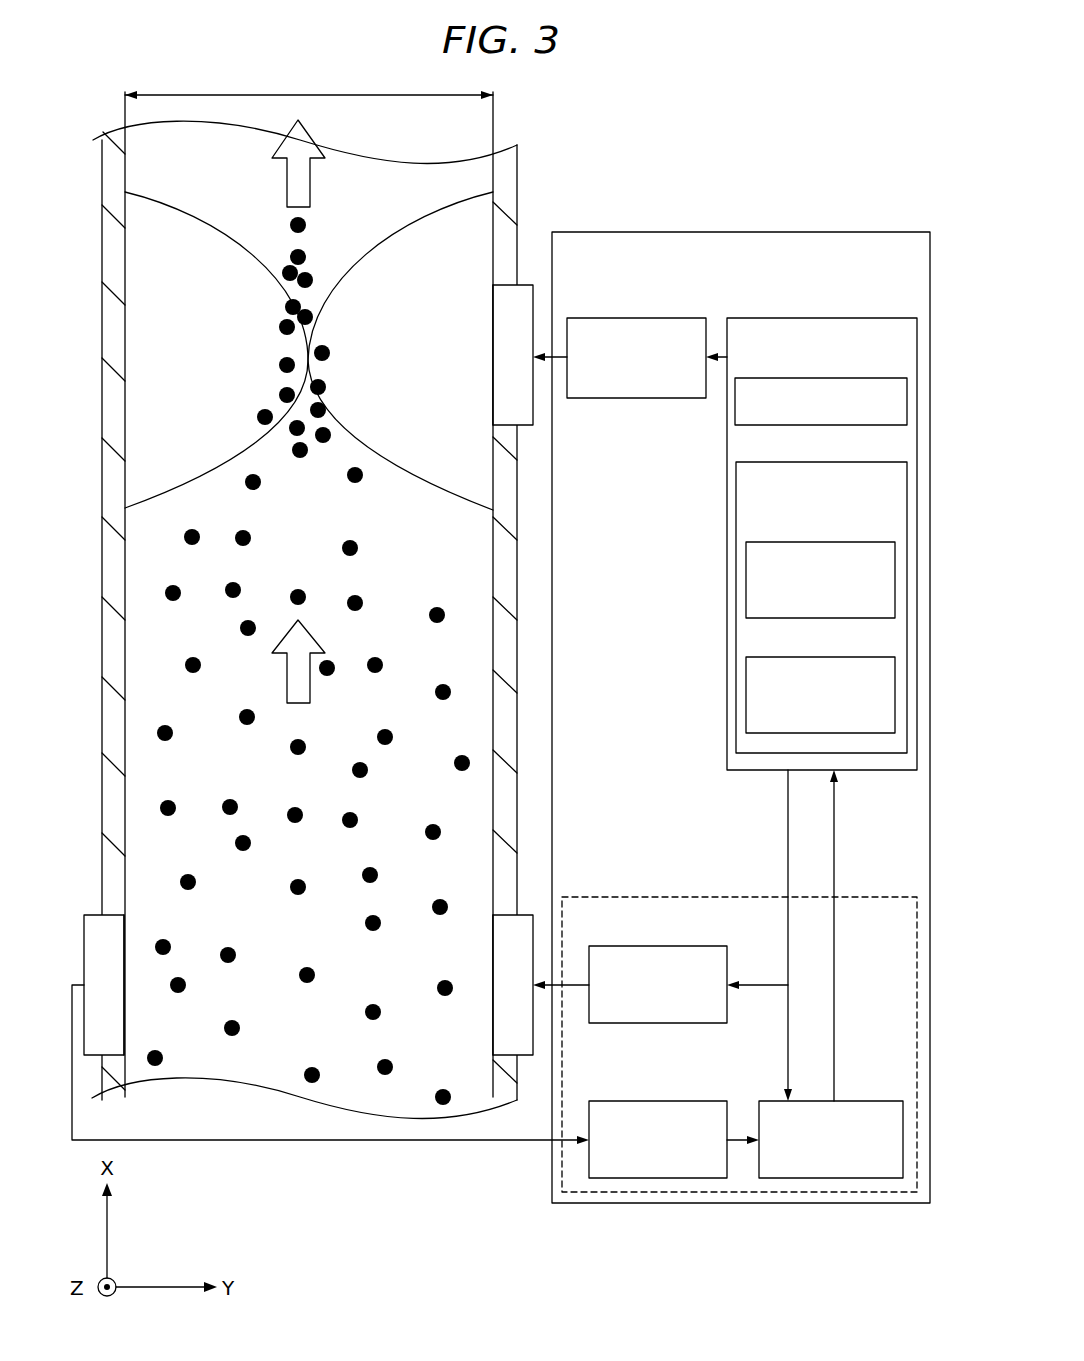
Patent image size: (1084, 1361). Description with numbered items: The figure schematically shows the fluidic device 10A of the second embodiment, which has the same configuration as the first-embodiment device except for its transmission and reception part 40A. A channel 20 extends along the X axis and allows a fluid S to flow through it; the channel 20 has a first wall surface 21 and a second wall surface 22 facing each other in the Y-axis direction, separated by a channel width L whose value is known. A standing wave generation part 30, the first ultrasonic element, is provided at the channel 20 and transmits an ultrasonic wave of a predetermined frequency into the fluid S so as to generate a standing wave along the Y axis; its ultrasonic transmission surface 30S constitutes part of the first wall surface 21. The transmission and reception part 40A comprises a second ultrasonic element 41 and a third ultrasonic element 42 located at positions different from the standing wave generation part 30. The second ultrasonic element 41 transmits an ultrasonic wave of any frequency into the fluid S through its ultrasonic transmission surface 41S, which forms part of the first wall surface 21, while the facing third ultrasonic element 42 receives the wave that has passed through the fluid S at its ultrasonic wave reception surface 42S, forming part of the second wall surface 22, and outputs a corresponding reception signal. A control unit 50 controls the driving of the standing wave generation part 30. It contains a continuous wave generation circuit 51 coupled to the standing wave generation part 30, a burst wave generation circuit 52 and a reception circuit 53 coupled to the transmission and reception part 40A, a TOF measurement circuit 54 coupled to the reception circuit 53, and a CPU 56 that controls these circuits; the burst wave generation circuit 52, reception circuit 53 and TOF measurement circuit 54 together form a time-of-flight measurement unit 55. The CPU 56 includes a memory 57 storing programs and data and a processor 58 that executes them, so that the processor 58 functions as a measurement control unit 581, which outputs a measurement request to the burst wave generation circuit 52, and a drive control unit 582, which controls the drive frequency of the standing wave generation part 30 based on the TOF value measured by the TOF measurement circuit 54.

The fluidic device 10A is at (499, 671).
The channel 20 is at (333, 596).
The first wall surface 21 is at (493, 620).
The second wall surface 22 is at (124, 676).
The standing wave generation part 30 is at (481, 320).
The ultrasonic transmission surface 30S is at (493, 318).
The transmission and reception part 40A is at (347, 1057).
The second ultrasonic element 41 is at (507, 1035).
The ultrasonic transmission surface 41S is at (493, 930).
The third ultrasonic element 42 is at (208, 1037).
The ultrasonic wave reception surface 42S is at (125, 918).
The control unit 50 is at (877, 232).
The continuous wave generation circuit 51 is at (651, 318).
The burst wave generation circuit 52 is at (678, 946).
The reception circuit 53 is at (676, 1101).
The TOF measurement circuit 54 is at (855, 1101).
The time-of-flight measurement unit 55 is at (878, 897).
The central processing unit 56 is at (863, 318).
The memory 57 is at (850, 378).
The processor 58 is at (850, 462).
The measurement control unit 581 is at (827, 542).
The drive control unit 582 is at (827, 657).
The fluid S is at (140, 563).
The particles M is at (157, 730).
The channel width L is at (309, 83).